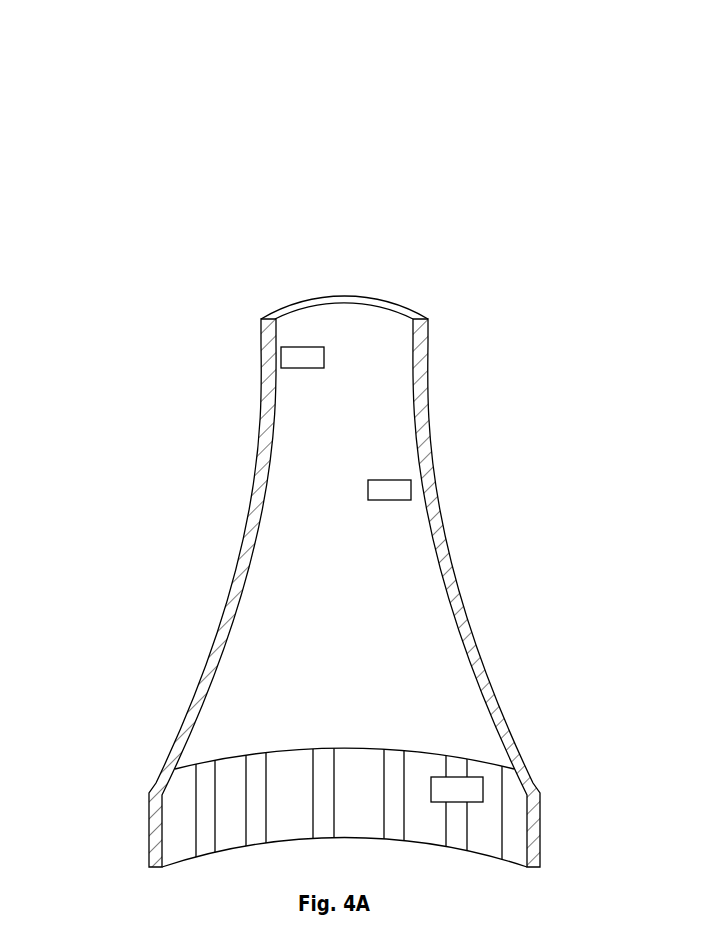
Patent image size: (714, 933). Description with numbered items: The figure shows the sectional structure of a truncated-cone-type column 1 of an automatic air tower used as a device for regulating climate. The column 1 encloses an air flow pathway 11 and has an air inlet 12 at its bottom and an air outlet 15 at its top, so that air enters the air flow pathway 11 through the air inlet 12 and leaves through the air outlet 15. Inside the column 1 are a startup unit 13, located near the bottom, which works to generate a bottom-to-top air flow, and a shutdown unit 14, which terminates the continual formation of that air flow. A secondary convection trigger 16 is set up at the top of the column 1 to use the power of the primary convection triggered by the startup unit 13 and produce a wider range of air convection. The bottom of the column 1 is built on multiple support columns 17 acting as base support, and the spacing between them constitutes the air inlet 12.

The column 1 is at (320, 260).
The air flow pathway 11 is at (290, 677).
The air inlet 12 is at (487, 817).
The startup unit 13 is at (453, 792).
The shutdown unit 14 is at (392, 490).
The air outlet 15 is at (387, 308).
The secondary convection trigger 16 is at (305, 360).
The support columns 17 is at (208, 835).